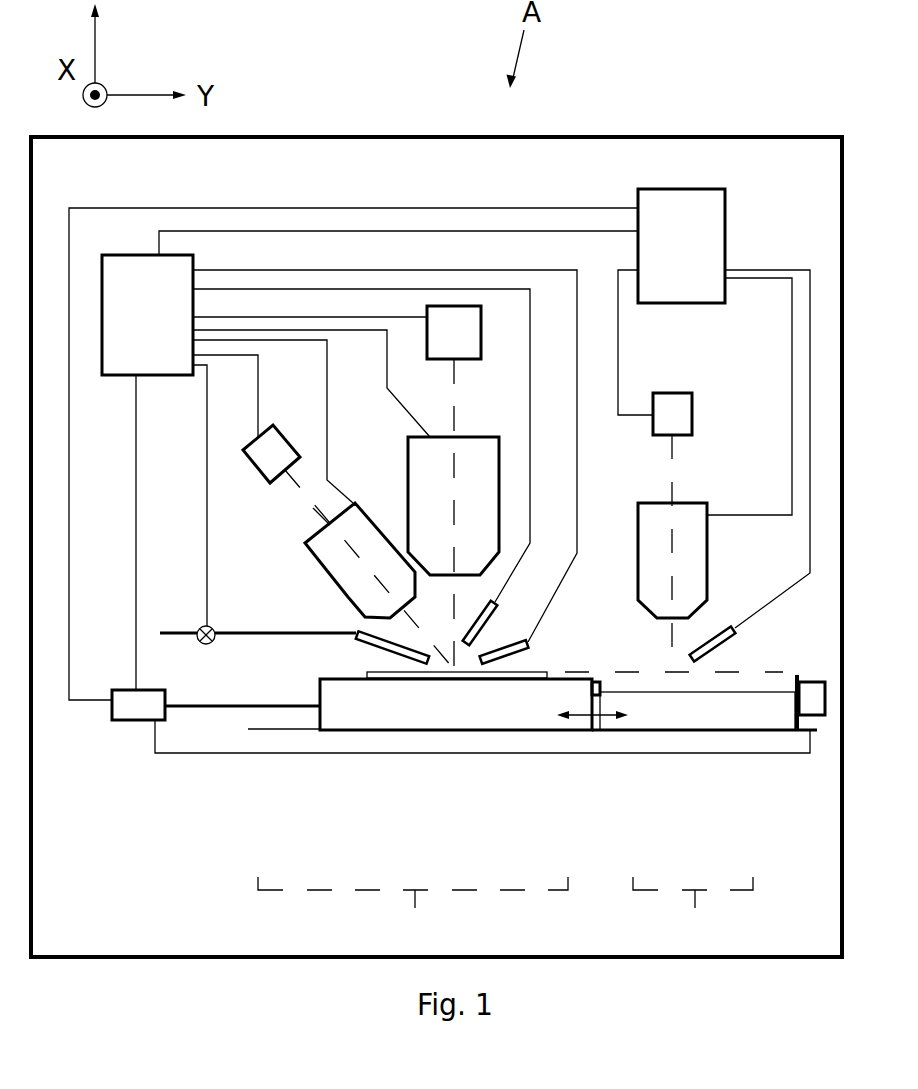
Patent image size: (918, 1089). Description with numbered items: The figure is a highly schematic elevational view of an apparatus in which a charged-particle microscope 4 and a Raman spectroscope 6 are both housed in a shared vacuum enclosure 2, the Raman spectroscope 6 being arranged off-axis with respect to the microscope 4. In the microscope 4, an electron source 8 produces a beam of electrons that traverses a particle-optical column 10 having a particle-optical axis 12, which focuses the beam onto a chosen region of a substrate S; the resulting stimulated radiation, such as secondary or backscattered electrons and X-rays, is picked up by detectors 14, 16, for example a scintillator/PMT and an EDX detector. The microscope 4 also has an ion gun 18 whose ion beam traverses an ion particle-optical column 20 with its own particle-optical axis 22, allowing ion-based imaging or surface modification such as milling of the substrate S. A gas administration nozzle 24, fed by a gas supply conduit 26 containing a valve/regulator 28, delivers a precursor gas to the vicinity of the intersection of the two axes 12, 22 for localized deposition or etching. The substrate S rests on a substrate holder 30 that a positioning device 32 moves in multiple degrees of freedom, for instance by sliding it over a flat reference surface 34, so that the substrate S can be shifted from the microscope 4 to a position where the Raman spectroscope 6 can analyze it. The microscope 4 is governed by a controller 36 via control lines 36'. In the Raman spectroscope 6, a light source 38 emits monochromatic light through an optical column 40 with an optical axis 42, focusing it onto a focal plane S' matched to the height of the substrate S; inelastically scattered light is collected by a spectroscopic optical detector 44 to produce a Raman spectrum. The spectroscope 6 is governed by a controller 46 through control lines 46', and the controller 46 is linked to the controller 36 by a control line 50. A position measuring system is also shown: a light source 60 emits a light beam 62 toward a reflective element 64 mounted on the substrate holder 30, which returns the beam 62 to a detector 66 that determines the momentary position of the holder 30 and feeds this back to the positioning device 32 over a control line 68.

The vacuum enclosure 2 is at (33, 838).
The charged-particle microscope 4 is at (413, 906).
The Raman spectroscope 6 is at (693, 905).
The electron source 8 is at (463, 350).
The particle-optical column 10 is at (422, 468).
The particle-optical axis 12 is at (452, 515).
The detector 14 is at (487, 622).
The detector 16 is at (532, 651).
The ion gun 18 is at (253, 457).
The ion particle-optical column 20 is at (363, 598).
The particle-optical axis 22 is at (310, 517).
The gas administration nozzle 24 is at (407, 652).
The gas supply conduit 26 is at (173, 633).
The valve/regulator 28 is at (206, 644).
The substrate holder 30 is at (540, 718).
The positioning device 32 is at (127, 708).
The flat reference surface 34 is at (620, 728).
The controller 36 is at (147, 356).
The control lines 36' is at (369, 480).
The light source 38 is at (683, 412).
The optical column 40 is at (690, 533).
The optical axis 42 is at (662, 596).
The spectroscopic optical detector 44 is at (724, 630).
The controller 46 is at (720, 246).
The control lines 46' is at (439, 433).
The control line 50 is at (393, 231).
The light source 60 is at (790, 703).
The light beam 62 is at (712, 690).
The reflective element 64 is at (600, 698).
The detector 66 is at (813, 700).
The control line 68 is at (205, 753).
The substrate S is at (457, 749).
The focal plane S' is at (697, 649).